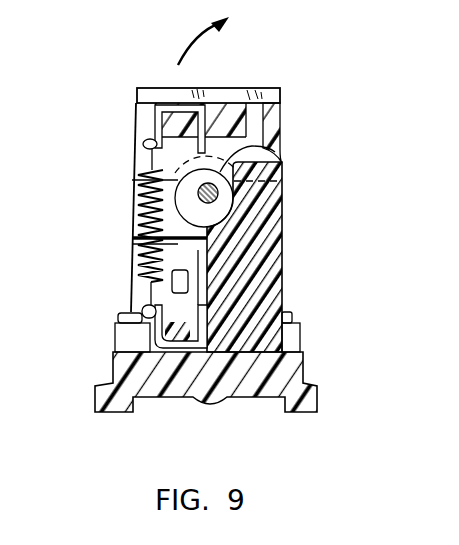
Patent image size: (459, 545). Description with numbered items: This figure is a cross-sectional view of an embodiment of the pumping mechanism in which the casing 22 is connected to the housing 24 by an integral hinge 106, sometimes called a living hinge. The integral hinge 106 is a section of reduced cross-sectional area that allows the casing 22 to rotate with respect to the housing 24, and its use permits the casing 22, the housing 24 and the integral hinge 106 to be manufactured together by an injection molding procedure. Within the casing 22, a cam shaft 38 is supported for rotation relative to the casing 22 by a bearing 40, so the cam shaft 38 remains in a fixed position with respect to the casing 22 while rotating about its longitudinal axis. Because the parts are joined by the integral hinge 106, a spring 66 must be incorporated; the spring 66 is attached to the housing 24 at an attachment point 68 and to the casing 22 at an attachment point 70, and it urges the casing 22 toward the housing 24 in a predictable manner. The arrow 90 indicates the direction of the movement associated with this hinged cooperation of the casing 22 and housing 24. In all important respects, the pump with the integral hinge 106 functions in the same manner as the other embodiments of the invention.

The arrow 90 is at (180, 41).
The casing 22 is at (280, 111).
The cam shaft 38 is at (275, 178).
The integral hinge 106 is at (282, 163).
The bearing 40 is at (290, 197).
The housing 24 is at (282, 244).
The attachment point 70 is at (144, 141).
The spring 66 is at (136, 213).
The attachment point 68 is at (142, 308).